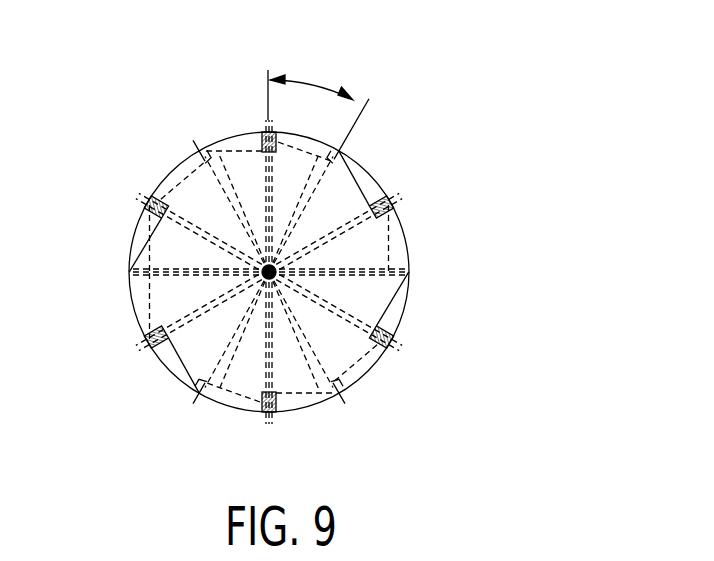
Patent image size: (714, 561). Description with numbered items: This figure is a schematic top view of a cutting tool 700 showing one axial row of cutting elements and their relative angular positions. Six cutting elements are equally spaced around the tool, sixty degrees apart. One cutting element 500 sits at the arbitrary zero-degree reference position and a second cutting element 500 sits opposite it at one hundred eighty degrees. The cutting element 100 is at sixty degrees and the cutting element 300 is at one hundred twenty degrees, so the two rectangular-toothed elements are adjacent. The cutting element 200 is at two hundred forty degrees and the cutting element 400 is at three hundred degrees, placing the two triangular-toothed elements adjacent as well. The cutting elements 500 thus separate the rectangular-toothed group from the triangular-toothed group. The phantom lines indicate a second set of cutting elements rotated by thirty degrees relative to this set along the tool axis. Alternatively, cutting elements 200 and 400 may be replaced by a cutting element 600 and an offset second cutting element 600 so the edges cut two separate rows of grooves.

The cutting element 100 is at (398, 208).
The cutting element 200 is at (148, 333).
The cutting element 300 is at (386, 352).
The cutting element 400 is at (155, 196).
The cutting element 500 is at (260, 137).
The cutting element 600 is at (244, 229).
The cutting tool 700 is at (467, 104).